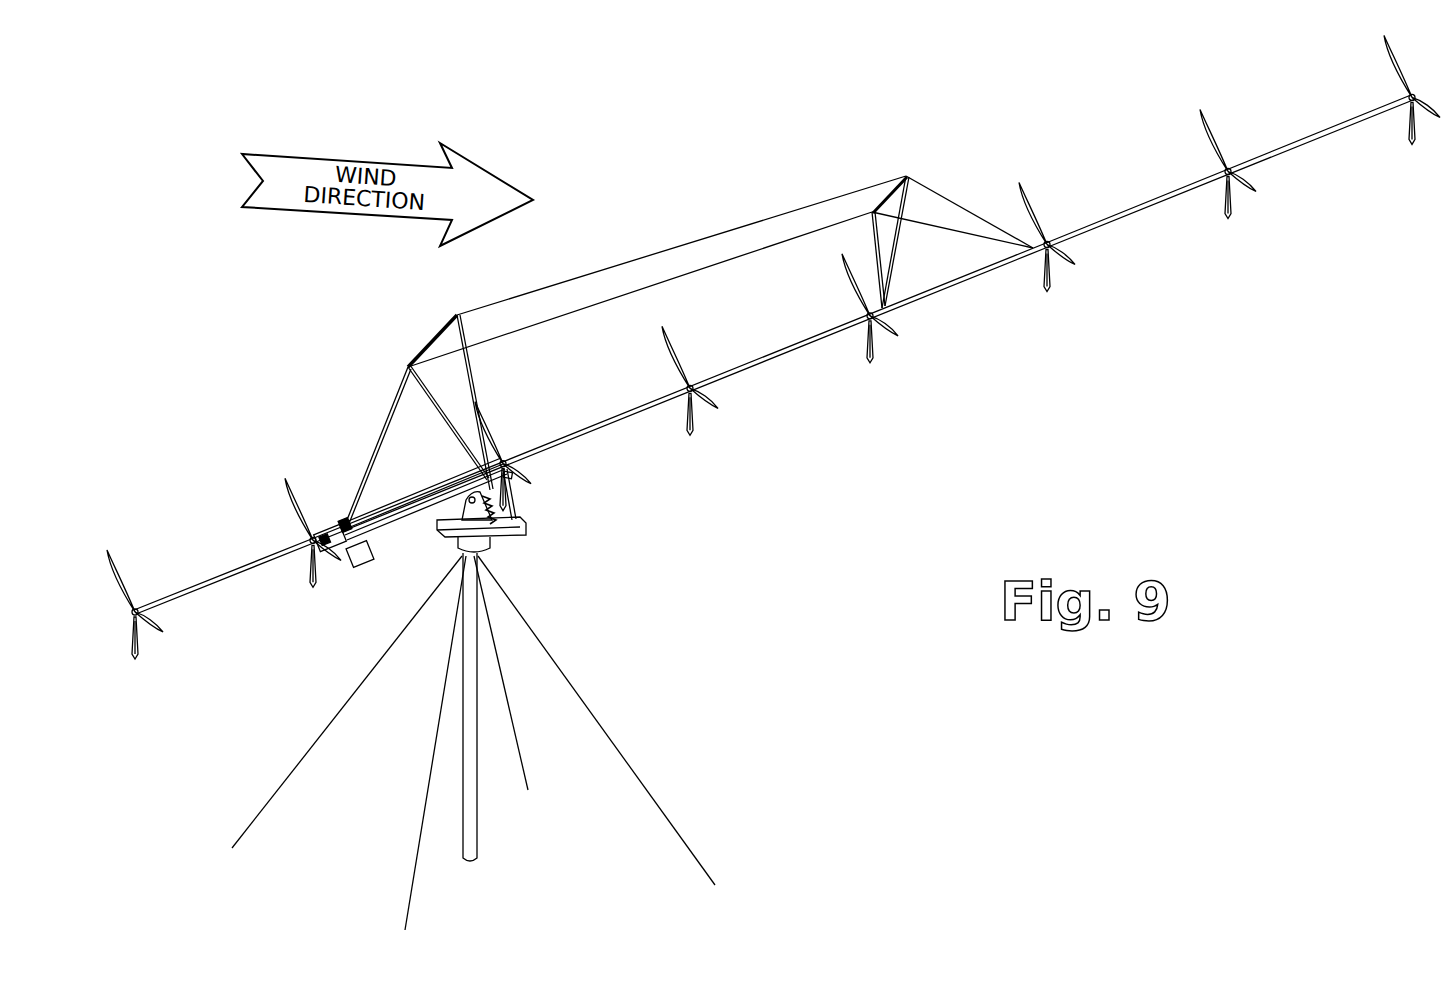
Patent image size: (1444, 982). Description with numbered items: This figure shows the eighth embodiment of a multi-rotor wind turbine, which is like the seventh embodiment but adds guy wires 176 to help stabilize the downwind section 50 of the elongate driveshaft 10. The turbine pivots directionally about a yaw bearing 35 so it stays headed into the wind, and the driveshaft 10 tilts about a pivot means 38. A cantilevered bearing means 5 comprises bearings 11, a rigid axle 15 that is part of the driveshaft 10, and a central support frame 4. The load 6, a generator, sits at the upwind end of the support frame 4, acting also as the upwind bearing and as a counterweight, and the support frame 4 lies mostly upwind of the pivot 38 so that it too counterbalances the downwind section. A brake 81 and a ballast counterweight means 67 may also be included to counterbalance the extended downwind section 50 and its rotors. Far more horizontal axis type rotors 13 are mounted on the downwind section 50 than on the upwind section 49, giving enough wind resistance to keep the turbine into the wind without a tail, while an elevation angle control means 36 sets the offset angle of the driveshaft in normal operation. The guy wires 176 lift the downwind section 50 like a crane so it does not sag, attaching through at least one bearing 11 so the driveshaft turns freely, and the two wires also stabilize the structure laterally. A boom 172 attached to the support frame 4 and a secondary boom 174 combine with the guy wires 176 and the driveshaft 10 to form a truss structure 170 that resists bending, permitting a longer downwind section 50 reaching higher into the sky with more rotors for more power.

The central support frame 4 is at (402, 517).
The cantilevered bearing means 5 is at (377, 403).
The load 6 is at (328, 525).
The elongate driveshaft 10 is at (793, 388).
The bearing 11 is at (958, 273).
The horizontal axis type rotor 13 is at (673, 342).
The axle 15 is at (409, 497).
The yaw bearing 35 is at (494, 542).
The elevation angle control means 36 is at (428, 525).
The pivot means 38 is at (466, 488).
The upwind section of the driveshaft 49 is at (215, 582).
The downwind section of the driveshaft 50 is at (1127, 219).
The ballast counterweight means 67 is at (358, 566).
The brake 81 is at (349, 517).
The truss structure 170 is at (684, 339).
The boom 172 is at (472, 360).
The secondary boom 174 is at (893, 255).
The guy wire to lift downwind section 176 is at (559, 283).